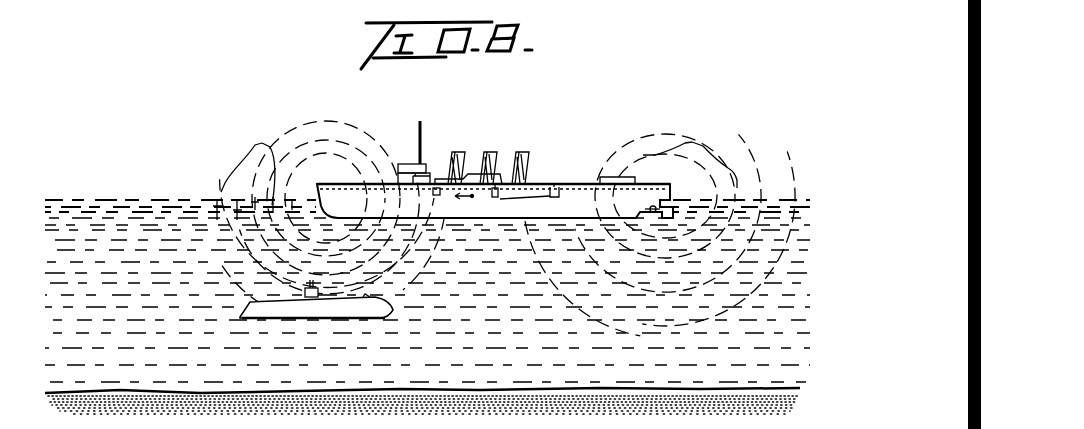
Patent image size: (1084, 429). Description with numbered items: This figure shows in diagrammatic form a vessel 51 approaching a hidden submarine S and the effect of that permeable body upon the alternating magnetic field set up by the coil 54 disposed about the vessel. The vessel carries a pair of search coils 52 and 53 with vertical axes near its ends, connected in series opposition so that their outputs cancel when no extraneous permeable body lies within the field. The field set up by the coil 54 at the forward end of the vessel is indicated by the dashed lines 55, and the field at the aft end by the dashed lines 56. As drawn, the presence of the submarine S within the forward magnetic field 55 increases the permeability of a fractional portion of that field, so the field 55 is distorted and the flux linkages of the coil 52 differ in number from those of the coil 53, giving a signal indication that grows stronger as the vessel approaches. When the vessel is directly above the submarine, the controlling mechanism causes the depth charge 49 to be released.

The depth charge 49 is at (500, 199).
The vessel 51 is at (470, 176).
The search coil 52 is at (345, 195).
The search coil 53 is at (640, 177).
The coil 54 is at (553, 186).
The magnetic field 55 is at (262, 143).
The magnetic field 56 is at (692, 142).
The submarine S is at (343, 318).